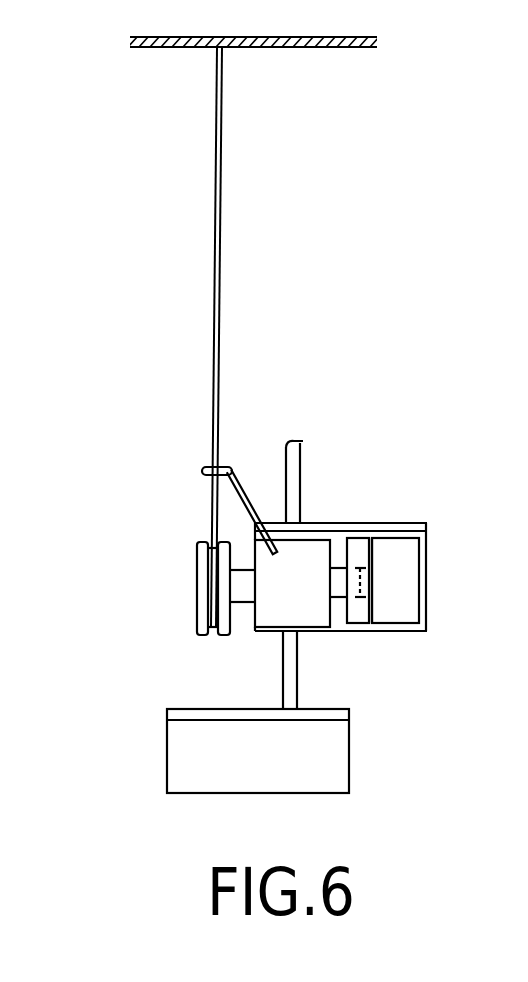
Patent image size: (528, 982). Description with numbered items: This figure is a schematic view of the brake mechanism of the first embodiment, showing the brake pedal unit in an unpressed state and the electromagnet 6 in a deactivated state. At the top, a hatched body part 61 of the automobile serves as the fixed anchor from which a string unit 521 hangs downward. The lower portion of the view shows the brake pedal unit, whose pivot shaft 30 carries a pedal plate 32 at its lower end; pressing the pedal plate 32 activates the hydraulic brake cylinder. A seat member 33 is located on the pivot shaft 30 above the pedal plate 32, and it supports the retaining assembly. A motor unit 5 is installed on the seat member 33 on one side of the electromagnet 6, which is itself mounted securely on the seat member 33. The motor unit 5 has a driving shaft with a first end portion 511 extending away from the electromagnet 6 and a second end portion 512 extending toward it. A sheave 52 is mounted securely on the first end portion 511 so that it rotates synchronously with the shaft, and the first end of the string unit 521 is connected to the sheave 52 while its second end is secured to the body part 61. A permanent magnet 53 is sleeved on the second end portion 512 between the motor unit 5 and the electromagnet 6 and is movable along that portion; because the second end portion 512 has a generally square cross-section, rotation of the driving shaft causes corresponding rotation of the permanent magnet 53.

The body part 61 is at (302, 48).
The string unit 521 is at (222, 232).
The sheave 52 is at (200, 567).
The first end portion 511 is at (242, 588).
The motor unit 5 is at (290, 557).
The second end portion 512 is at (342, 577).
The permanent magnet 53 is at (363, 548).
The electromagnet 6 is at (403, 562).
The seat member 33 is at (385, 630).
The pivot shaft 30 is at (297, 668).
The pedal plate 32 is at (325, 758).